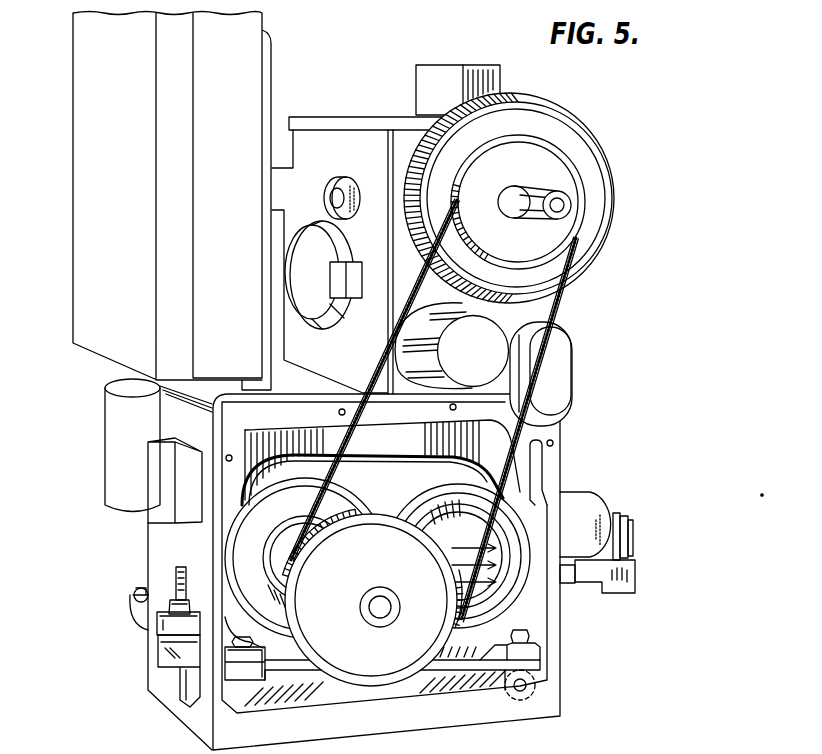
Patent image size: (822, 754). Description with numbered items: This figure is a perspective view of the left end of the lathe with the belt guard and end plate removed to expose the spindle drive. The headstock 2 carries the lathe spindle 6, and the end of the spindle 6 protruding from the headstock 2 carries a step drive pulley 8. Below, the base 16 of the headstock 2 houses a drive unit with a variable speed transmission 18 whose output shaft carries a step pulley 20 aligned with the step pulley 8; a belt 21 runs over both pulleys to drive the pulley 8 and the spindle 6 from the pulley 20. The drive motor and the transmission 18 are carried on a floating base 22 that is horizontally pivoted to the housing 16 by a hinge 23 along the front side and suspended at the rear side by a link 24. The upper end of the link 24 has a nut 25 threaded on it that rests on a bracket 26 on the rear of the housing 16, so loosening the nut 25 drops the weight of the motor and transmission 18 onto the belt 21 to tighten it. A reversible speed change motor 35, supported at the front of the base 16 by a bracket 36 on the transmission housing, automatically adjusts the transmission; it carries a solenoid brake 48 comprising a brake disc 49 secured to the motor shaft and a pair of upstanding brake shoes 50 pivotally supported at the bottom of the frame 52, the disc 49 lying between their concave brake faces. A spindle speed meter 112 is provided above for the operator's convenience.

The headstock 2 is at (360, 137).
The lathe spindle 6 is at (533, 190).
The step drive pulley 8 is at (590, 160).
The base of headstock 16 is at (555, 638).
The variable speed transmission 18 is at (401, 456).
The step pulley 20 is at (358, 663).
The belt 21 is at (542, 362).
The floating base 22 is at (268, 675).
The hinge 23 is at (527, 685).
The link 24 is at (175, 639).
The nut 25 is at (170, 600).
The bracket 26 is at (157, 622).
The reversible speed change motor 35 is at (587, 492).
The bracket 36 is at (566, 577).
The solenoid brake 48 is at (636, 518).
The brake disc 49 is at (613, 513).
The brake shoes 50 is at (630, 543).
The brake frame 52 is at (636, 568).
The spindle speed meter 112 is at (443, 72).